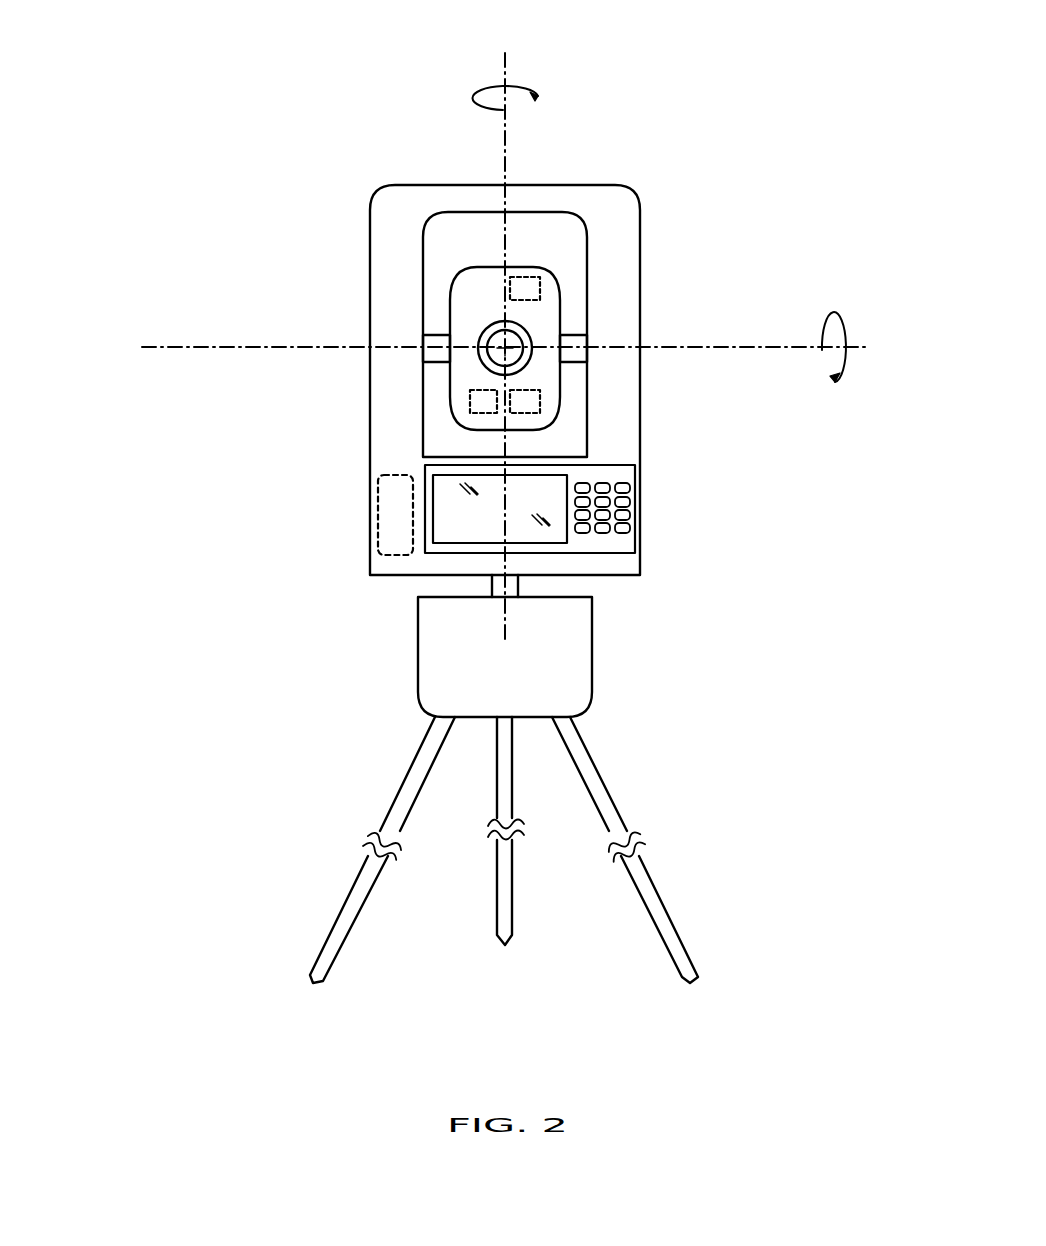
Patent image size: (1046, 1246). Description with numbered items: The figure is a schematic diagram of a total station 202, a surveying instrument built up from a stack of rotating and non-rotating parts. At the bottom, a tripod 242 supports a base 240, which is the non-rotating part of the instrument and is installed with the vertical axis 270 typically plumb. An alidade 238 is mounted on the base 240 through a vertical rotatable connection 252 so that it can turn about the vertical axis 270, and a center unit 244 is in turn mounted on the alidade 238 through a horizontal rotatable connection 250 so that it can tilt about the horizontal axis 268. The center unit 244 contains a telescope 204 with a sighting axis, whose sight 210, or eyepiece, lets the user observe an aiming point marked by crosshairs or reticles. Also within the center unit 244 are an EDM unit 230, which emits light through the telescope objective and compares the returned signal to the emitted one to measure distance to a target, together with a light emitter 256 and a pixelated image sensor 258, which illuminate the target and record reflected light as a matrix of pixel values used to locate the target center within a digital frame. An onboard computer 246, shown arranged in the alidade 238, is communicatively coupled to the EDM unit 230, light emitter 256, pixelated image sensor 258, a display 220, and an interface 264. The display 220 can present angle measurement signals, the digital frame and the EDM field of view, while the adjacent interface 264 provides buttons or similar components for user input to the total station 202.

The total station 202 is at (233, 806).
The telescope 204 is at (483, 363).
The sight 210 is at (512, 342).
The display 220 is at (563, 537).
The EDM unit 230 is at (540, 287).
The alidade 238 is at (615, 565).
The base 240 is at (438, 702).
The tripod 242 is at (503, 780).
The center unit 244 is at (467, 290).
The onboard computer 246 is at (380, 533).
The horizontal rotatable connection 250 is at (573, 340).
The vertical rotatable connection 252 is at (493, 583).
The light emitter 256 is at (470, 403).
The pixelated image sensor 258 is at (538, 402).
The interface 264 is at (627, 473).
The horizontal axis 268 is at (282, 347).
The vertical axis 270 is at (503, 58).